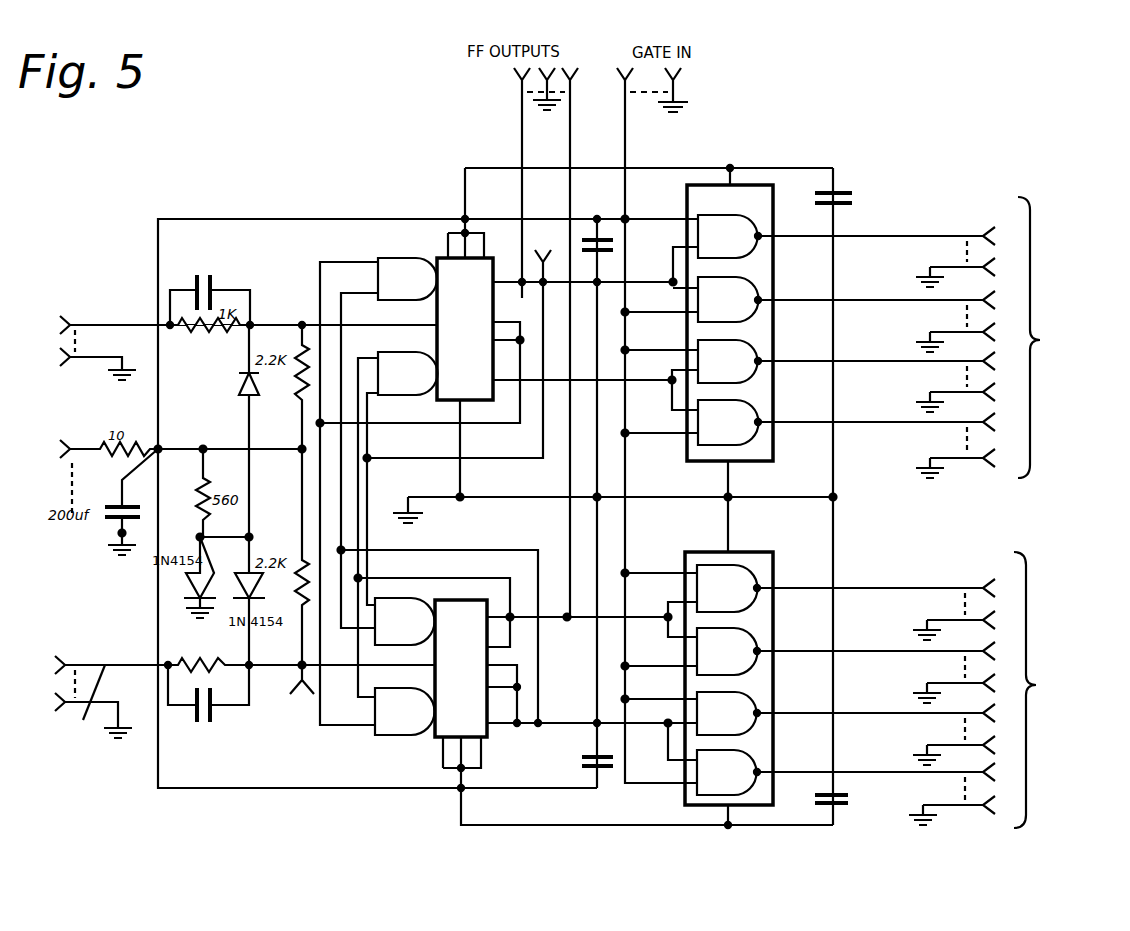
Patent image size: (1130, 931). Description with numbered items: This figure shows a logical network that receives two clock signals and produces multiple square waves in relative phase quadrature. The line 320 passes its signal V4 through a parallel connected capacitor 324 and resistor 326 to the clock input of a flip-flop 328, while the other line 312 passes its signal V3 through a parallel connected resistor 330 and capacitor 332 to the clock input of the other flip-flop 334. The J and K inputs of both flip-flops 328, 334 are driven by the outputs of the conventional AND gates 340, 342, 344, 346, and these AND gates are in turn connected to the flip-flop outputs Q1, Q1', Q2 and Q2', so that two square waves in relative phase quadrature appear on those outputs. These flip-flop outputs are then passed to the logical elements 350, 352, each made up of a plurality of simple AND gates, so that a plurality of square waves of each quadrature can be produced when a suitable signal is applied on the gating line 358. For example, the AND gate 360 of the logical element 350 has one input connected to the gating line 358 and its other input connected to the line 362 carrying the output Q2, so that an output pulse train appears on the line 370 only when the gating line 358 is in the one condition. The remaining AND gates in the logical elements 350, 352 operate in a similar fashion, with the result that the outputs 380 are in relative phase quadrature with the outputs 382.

The line 312 is at (92, 711).
The line 320 is at (94, 323).
The capacitor 324 is at (205, 271).
The resistor 326 is at (203, 338).
The flip-flop 328 is at (483, 295).
The resistor 330 is at (180, 663).
The capacitor 332 is at (205, 725).
The flip-flop 334 is at (478, 721).
The AND gate 340 is at (402, 251).
The AND gate 342 is at (425, 367).
The AND gate 344 is at (418, 578).
The AND gate 346 is at (396, 738).
The logical element 350 is at (755, 302).
The logical element 352 is at (727, 785).
The gating line 358 is at (628, 160).
The AND gate 360 is at (760, 226).
The line 362 is at (552, 278).
The line 370 is at (910, 226).
The outputs 380 is at (1040, 340).
The outputs 382 is at (1037, 685).